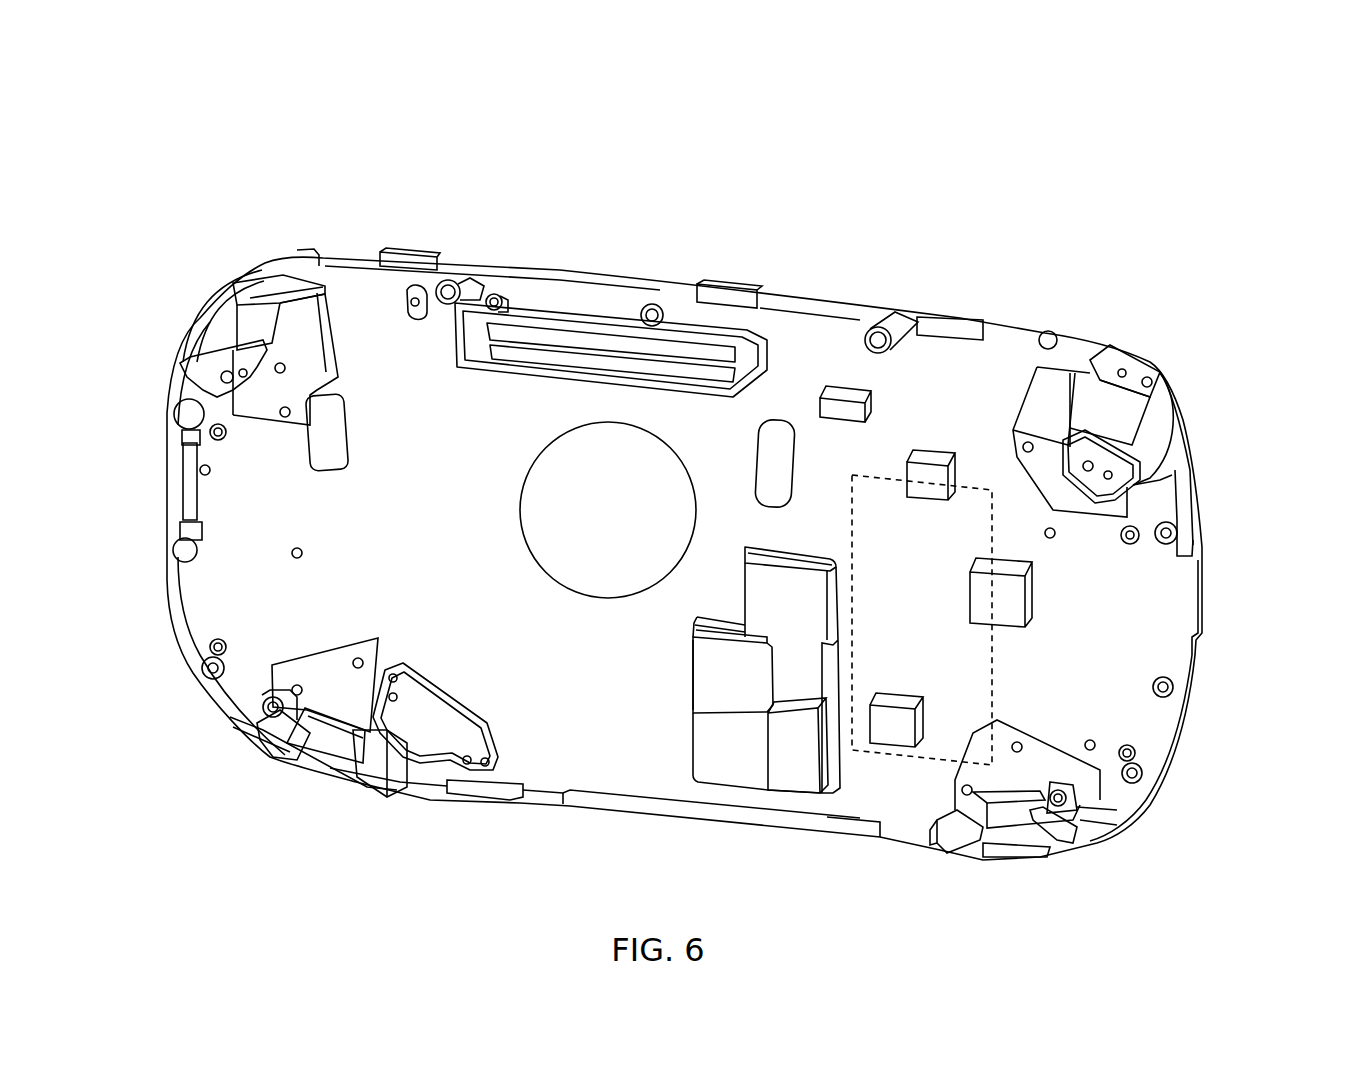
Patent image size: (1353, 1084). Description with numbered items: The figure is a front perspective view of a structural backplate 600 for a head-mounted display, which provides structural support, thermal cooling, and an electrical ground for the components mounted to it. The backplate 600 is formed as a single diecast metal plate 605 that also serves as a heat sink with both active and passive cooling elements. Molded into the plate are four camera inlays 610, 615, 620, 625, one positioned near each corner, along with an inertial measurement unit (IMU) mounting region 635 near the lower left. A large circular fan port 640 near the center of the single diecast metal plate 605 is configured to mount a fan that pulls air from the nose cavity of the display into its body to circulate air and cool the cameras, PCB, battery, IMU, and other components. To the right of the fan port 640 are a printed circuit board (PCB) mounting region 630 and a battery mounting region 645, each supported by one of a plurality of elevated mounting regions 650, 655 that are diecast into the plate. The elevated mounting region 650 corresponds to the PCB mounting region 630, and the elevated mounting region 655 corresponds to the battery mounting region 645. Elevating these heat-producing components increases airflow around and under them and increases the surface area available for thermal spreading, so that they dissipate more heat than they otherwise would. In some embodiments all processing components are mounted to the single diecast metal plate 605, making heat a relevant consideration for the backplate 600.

The structural backplate 600 is at (177, 94).
The single diecast metal plate 605 is at (803, 330).
The camera inlay 610 is at (298, 300).
The camera inlay 615 is at (1117, 417).
The camera inlay 620 is at (337, 777).
The camera inlay 625 is at (1020, 857).
The printed circuit board (PCB) mounting region 630 is at (720, 750).
The inertial measurement unit (IMU) mounting region 635 is at (447, 743).
The fan port 640 is at (579, 548).
The battery mounting region 645 is at (893, 684).
The elevated mounting region 650 is at (674, 696).
The elevated mounting region 655 is at (1055, 615).